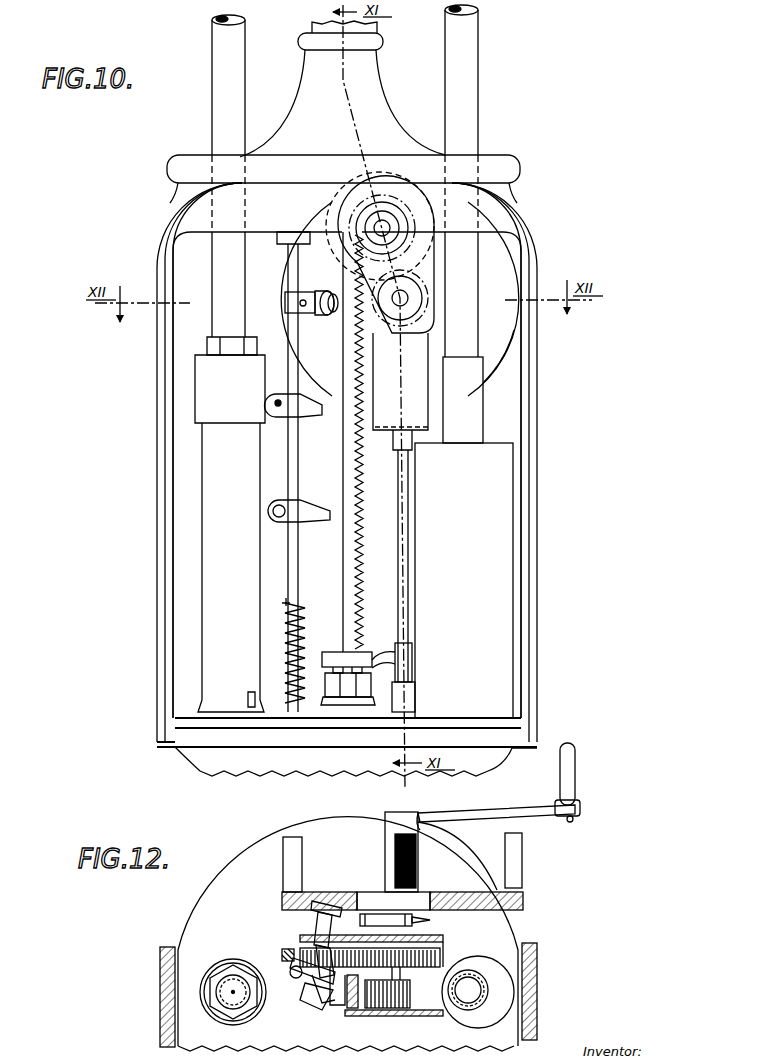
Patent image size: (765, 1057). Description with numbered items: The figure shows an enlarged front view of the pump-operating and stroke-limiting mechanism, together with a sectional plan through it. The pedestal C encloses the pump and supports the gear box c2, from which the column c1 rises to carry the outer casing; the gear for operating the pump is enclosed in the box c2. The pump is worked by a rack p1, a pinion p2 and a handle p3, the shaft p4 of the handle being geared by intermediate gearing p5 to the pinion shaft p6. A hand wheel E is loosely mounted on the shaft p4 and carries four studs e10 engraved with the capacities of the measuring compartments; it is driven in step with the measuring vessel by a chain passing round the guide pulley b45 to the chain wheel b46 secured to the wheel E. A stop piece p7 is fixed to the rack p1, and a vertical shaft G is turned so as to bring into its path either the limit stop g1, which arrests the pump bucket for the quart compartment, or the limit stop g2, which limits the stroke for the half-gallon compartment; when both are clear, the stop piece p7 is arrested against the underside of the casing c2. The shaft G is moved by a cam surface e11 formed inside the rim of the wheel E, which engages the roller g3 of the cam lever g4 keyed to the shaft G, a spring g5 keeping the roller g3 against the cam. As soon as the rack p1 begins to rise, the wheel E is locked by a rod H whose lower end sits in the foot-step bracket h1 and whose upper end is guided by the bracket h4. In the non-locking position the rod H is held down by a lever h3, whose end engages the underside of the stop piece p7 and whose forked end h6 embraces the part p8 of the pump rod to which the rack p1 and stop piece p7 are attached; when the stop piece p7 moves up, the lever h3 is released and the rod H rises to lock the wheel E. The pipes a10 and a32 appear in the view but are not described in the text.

In FIG. 10, the inlet pipe a10 is at (217, 93).
In FIG. 12, the inlet pipe a10 is at (221, 982).
In FIG. 10, the outlet pipe a32 is at (470, 95).
In FIG. 12, the outlet pipe a32 is at (463, 1000).
In FIG. 10, the column c1 is at (373, 60).
In FIG. 10, the gear box c2 is at (155, 600).
In FIG. 12, the gear box c2 is at (160, 988).
In FIG. 10, the pedestal C is at (205, 758).
In FIG. 12, the pedestal C is at (193, 910).
In FIG. 10, the hand wheel E is at (327, 342).
In FIG. 12, the hand wheel E is at (467, 890).
In FIG. 12, the stud e10 is at (283, 860).
In FIG. 10, the cam surface e11 is at (481, 330).
In FIG. 12, the cam surface e11 is at (523, 898).
In FIG. 10, the vertical shaft G is at (292, 455).
In FIG. 12, the vertical shaft G is at (294, 976).
In FIG. 10, the limit stop g1 is at (330, 522).
In FIG. 12, the limit stop g1 is at (300, 962).
In FIG. 10, the limit stop g2 is at (312, 410).
In FIG. 12, the limit stop g2 is at (312, 1000).
In FIG. 10, the roller g3 is at (331, 290).
In FIG. 12, the roller g3 is at (325, 902).
In FIG. 10, the cam lever g4 is at (285, 302).
In FIG. 12, the cam lever g4 is at (318, 928).
In FIG. 10, the spring g5 is at (287, 642).
In FIG. 10, the rod H is at (408, 527).
In FIG. 10, the foot-step bracket h1 is at (414, 696).
In FIG. 10, the lever h3 is at (410, 655).
In FIG. 10, the bracket h4 is at (413, 418).
In FIG. 10, the forked end h6 is at (350, 686).
In FIG. 10, the rack p1 is at (355, 373).
In FIG. 12, the rack p1 is at (352, 1008).
In FIG. 10, the pinion p2 is at (399, 226).
In FIG. 12, the pinion p2 is at (430, 1016).
In FIG. 12, the handle p3 is at (498, 816).
In FIG. 10, the shaft p4 is at (405, 326).
In FIG. 12, the shaft p4 is at (405, 1016).
In FIG. 10, the intermediate gearing p5 is at (344, 185).
In FIG. 12, the intermediate gearing p5 is at (443, 955).
In FIG. 10, the pinion shaft p6 is at (384, 224).
In FIG. 12, the pinion shaft p6 is at (380, 1010).
In FIG. 10, the stop piece p7 is at (333, 653).
In FIG. 12, the stop piece p7 is at (330, 1001).
In FIG. 10, the part of pump rod p8 is at (350, 686).
In FIG. 12, the guide pulley b45 is at (363, 914).
In FIG. 12, the chain wheel b46 is at (432, 920).